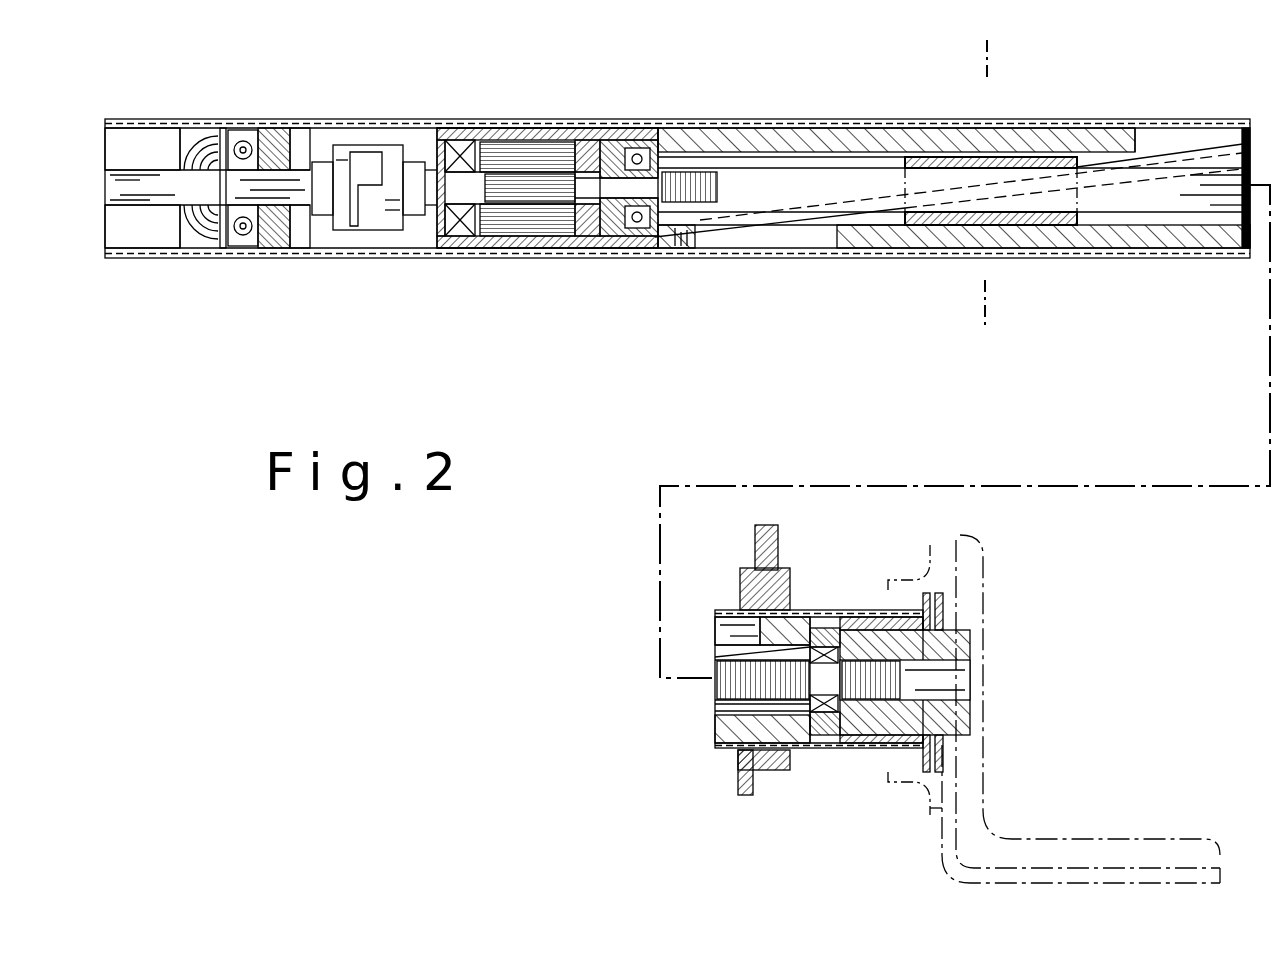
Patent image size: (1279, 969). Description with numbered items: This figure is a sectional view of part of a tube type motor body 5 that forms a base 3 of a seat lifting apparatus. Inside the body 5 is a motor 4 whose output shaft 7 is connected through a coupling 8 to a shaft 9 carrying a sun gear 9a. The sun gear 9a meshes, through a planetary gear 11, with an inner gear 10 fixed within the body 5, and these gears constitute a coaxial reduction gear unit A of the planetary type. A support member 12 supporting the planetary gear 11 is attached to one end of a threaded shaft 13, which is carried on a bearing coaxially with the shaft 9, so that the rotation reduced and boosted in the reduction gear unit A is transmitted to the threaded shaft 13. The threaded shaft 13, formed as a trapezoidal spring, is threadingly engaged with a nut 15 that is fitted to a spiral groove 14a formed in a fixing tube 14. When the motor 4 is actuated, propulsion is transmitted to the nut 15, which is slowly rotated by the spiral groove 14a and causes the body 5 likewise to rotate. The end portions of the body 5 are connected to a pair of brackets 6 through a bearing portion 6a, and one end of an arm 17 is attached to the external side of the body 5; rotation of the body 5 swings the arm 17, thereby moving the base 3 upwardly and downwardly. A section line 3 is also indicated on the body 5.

The base 3 is at (986, 189).
The motor 4 is at (158, 150).
The tube type motor body 5 is at (636, 124).
The bracket 6 is at (935, 590).
The bearing portion 6a is at (972, 712).
The output shaft 7 is at (288, 182).
The coupling 8 is at (362, 240).
The shaft 9 is at (455, 250).
The sun gear 9a is at (538, 250).
The inner gear 10 is at (505, 250).
The planetary gear 11 is at (518, 142).
The support member 12 is at (602, 250).
The threaded shaft 13 is at (766, 192).
The fixing tube 14 is at (788, 148).
The spiral groove 14a is at (1226, 158).
The nut 15 is at (942, 226).
The arm 17 is at (780, 560).
The coaxial reduction gear unit A is at (482, 140).